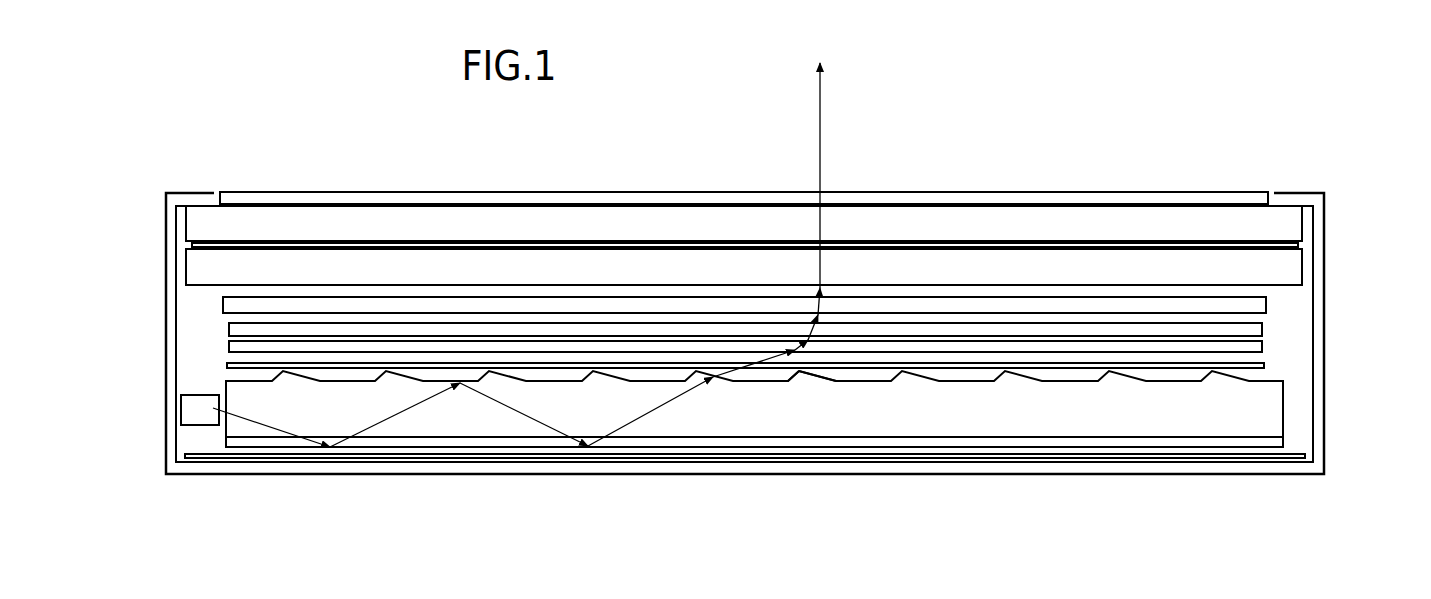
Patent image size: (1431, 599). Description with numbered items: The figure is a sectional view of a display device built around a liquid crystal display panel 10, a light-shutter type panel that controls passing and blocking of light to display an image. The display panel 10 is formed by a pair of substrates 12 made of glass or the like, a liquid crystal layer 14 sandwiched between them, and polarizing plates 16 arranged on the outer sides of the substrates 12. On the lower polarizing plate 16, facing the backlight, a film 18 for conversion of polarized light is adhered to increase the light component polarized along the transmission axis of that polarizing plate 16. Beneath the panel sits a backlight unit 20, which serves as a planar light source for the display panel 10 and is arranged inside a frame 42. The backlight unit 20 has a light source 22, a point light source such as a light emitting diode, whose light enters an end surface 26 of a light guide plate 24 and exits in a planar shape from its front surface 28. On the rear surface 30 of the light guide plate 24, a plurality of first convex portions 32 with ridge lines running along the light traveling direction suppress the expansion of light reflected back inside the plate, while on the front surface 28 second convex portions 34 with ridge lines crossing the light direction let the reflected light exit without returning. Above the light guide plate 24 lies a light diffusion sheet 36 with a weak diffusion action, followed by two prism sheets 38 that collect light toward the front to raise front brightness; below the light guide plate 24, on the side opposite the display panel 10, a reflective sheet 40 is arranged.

The display panel 10 is at (808, 243).
The substrates 12 is at (1297, 223).
The liquid crystal layer 14 is at (1290, 246).
The polarizing plates 16 is at (1230, 198).
The film for conversion of polarized light 18 is at (1253, 329).
The backlight unit 20 is at (190, 440).
The light source 22 is at (190, 412).
The light guide plate 24 is at (1274, 410).
The end surface 26 is at (220, 428).
The front surface 28 is at (755, 381).
The rear surface 30 is at (620, 448).
The first convex portions 32 is at (687, 444).
The second convex portions 34 is at (808, 377).
The light diffusion sheet 36 is at (1265, 364).
The prism sheets 38 is at (1253, 346).
The reflective sheet 40 is at (1310, 455).
The frame 42 is at (314, 468).